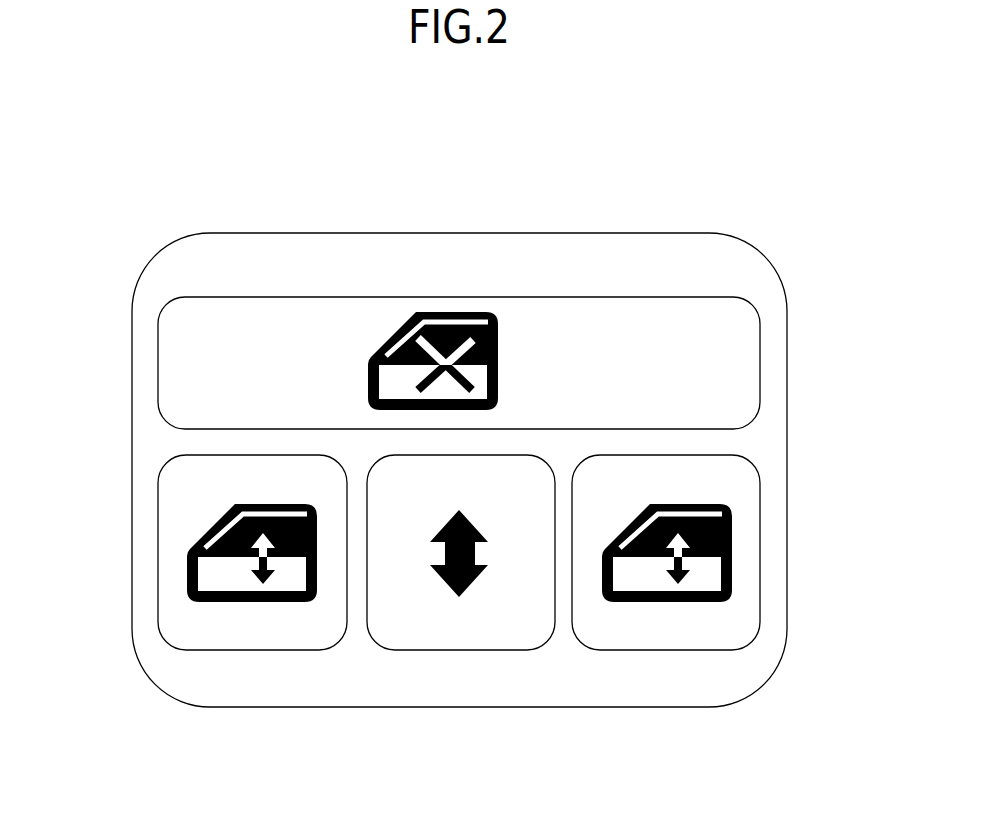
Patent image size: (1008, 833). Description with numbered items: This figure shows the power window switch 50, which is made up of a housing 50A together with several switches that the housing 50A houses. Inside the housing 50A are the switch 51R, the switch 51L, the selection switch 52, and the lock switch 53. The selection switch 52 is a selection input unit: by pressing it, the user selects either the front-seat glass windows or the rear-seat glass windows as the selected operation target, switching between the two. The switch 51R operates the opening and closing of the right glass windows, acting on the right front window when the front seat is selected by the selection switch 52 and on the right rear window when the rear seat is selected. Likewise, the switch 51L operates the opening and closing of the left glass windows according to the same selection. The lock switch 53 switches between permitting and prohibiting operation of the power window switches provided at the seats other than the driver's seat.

The power window switch 50 is at (835, 160).
The housing 50A is at (787, 362).
The lock switch 53 is at (560, 297).
The switch 51L is at (158, 552).
The switch 51R is at (760, 552).
The selection switch 52 is at (460, 650).